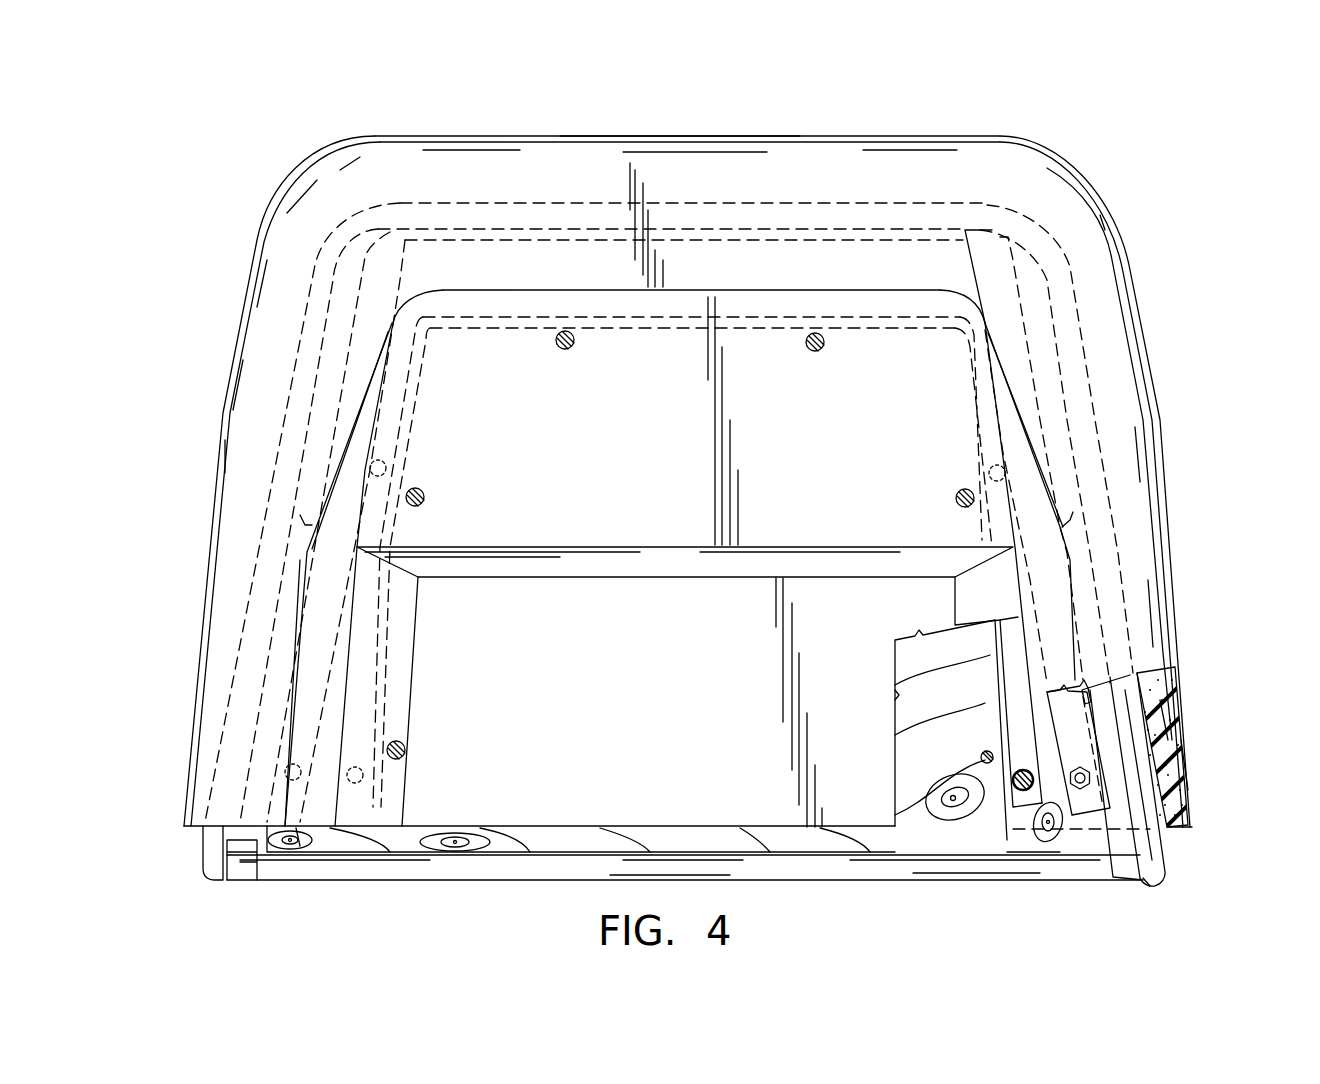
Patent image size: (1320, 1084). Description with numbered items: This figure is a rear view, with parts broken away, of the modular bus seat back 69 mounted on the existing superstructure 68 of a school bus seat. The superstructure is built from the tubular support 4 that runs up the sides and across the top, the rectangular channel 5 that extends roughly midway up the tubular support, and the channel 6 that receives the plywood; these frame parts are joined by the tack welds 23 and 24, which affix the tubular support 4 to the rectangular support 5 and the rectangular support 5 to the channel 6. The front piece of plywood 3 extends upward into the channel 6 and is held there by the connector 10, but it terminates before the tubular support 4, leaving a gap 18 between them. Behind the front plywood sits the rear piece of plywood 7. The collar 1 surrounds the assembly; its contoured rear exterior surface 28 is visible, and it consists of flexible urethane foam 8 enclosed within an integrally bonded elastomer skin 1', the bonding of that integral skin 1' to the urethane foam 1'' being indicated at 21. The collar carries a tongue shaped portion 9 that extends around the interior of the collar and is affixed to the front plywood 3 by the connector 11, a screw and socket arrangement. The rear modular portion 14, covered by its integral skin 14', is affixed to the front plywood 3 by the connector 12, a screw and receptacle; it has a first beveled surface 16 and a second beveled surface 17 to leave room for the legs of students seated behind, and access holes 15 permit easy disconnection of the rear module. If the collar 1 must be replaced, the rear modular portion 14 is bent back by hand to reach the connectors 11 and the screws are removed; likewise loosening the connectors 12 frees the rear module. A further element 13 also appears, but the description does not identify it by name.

The collar 1 is at (623, 98).
The integrally bonded elastomer skin 1' is at (1227, 765).
The urethane foam 1'' is at (1224, 720).
The front piece of plywood 3 is at (540, 240).
The tubular support 4 is at (877, 215).
The rectangular channel 5 is at (300, 515).
The channel 6 is at (362, 345).
The rear piece of plywood 7 is at (523, 843).
The flexible urethane foam 8 is at (1170, 763).
The tongue shaped portion 9 is at (760, 303).
The connector 10 is at (300, 833).
The connector 11 is at (388, 467).
The connector 12 is at (560, 348).
The trim strip 13 is at (690, 322).
The rear modular portion 14 is at (662, 858).
The integral skin 14' is at (876, 772).
The access holes 15 is at (567, 350).
The first beveled surface 16 is at (410, 633).
The second beveled surface 17 is at (333, 690).
The gap 18 is at (795, 230).
The bonding of integral skin to urethane foam 21 is at (1188, 783).
The tack weld 23 is at (1188, 813).
The tack weld 24 is at (1086, 695).
The rear exterior surface 28 is at (380, 157).
The existing superstructure 68 is at (1170, 880).
The modular bus seat back 69 is at (997, 125).